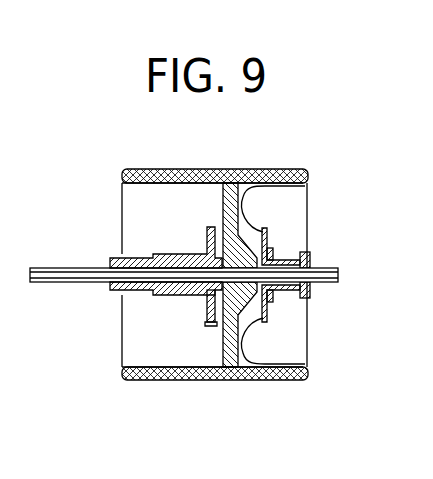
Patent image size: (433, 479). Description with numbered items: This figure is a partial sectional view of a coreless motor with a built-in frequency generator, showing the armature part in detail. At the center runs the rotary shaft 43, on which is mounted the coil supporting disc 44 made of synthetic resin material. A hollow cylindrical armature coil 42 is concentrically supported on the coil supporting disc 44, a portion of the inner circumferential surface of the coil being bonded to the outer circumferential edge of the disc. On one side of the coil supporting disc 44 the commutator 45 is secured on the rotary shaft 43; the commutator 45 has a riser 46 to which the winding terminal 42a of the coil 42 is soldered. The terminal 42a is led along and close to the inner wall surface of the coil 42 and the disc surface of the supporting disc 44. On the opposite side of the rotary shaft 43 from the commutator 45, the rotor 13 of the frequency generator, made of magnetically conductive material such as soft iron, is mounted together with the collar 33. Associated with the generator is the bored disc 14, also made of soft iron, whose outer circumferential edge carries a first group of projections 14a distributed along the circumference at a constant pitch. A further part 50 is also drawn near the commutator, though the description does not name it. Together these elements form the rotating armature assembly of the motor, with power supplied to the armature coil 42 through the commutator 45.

The hollow cylindrical armature coil 42 is at (271, 168).
The winding terminal 42a is at (298, 189).
The coil supporting disc 44 is at (228, 368).
The riser 46 is at (266, 232).
The commutator 45 is at (291, 298).
The retaining ring 50 is at (308, 264).
The rotary shaft 43 is at (70, 268).
The rotor 13 is at (172, 254).
The collar 33 is at (110, 286).
The bored disc 14 is at (204, 303).
The first group of projections 14a is at (206, 325).